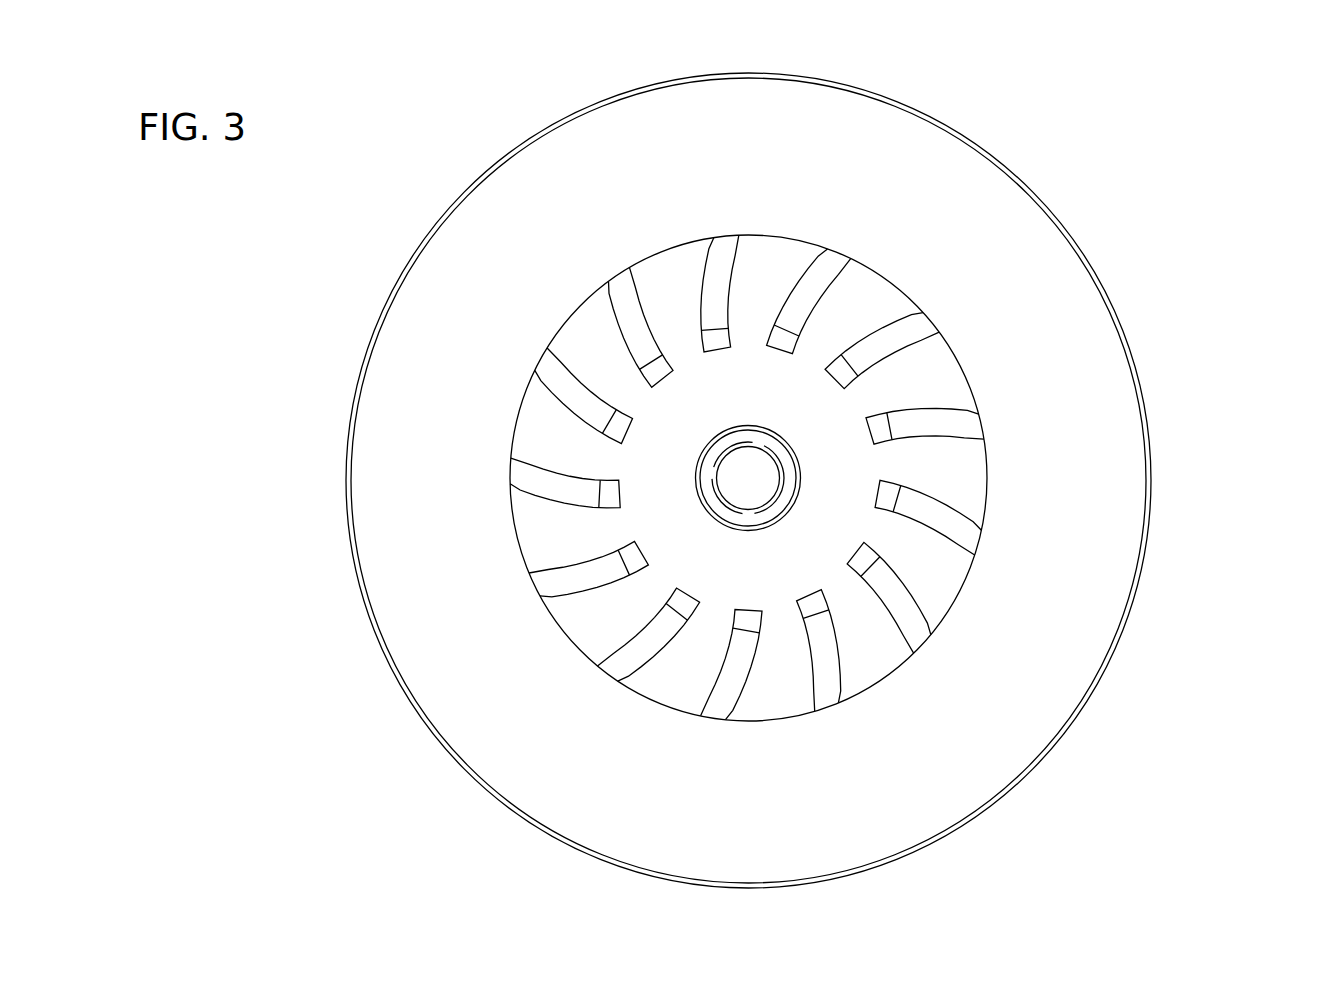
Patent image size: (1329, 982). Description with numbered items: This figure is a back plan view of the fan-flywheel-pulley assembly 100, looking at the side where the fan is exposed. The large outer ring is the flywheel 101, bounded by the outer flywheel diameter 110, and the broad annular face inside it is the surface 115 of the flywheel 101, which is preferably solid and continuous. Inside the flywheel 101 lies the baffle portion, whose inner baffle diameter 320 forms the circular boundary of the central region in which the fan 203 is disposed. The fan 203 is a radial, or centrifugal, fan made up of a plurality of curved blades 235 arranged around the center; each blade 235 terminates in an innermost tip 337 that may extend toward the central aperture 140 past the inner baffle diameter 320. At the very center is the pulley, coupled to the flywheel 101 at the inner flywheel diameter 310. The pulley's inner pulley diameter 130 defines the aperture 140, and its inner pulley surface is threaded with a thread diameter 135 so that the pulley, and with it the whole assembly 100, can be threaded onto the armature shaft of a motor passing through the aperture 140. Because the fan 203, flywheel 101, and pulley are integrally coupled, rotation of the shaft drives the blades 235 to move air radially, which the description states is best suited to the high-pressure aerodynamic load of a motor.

The fan-flywheel-pulley assembly 100 is at (1207, 183).
The flywheel 101 is at (927, 108).
The outer flywheel diameter 110 is at (1033, 187).
The surface of the flywheel 115 is at (1060, 297).
The inner baffle diameter 320 is at (987, 484).
The fan 203 is at (595, 630).
The blades 235 is at (642, 335).
The innermost tip 337 is at (657, 367).
The inner pulley diameter 130 is at (753, 481).
The inner flywheel diameter 310 is at (800, 478).
The thread diameter 135 is at (715, 468).
The aperture 140 is at (740, 492).